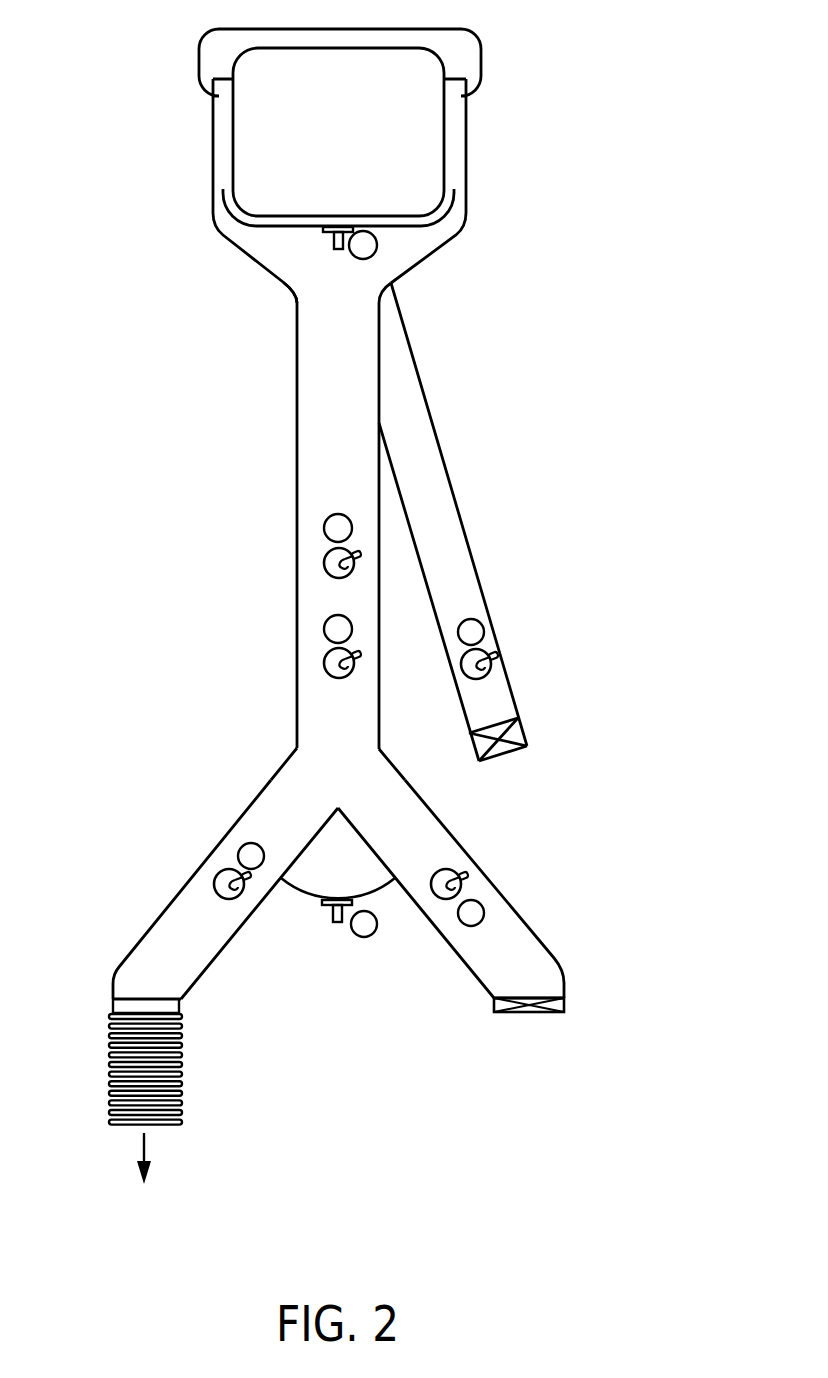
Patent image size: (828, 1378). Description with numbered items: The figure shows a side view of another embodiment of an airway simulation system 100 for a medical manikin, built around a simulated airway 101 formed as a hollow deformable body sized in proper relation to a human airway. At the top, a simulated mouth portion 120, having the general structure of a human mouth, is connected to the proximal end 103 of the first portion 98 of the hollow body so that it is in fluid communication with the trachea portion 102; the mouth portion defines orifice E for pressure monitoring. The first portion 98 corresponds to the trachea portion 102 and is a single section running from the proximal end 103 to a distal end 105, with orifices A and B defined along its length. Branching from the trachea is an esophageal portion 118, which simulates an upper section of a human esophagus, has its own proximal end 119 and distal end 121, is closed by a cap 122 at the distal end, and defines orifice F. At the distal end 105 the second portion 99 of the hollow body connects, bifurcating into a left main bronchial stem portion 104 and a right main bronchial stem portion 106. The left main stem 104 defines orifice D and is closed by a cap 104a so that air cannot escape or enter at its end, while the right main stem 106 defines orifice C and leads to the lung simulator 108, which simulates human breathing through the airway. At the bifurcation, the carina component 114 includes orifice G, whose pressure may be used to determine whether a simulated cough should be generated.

The airway simulation system 100 is at (586, 88).
The simulated mouth portion 120 is at (218, 143).
The simulated airway 101 is at (423, 248).
The proximal end 103 is at (290, 290).
The proximal end 119 is at (390, 282).
The trachea portion 102 is at (310, 440).
The first portion 98 is at (266, 538).
The esophageal portion 118 is at (443, 507).
The distal end 121 is at (517, 717).
The cap 122 is at (525, 733).
The distal end 105 is at (296, 750).
The right main bronchial stem portion 106 is at (247, 808).
The second portion 99 is at (142, 880).
The left main bronchial stem portion 104 is at (438, 843).
The cap 104a is at (563, 1000).
The carina component 114 is at (305, 883).
The lung simulator 108 is at (146, 1143).